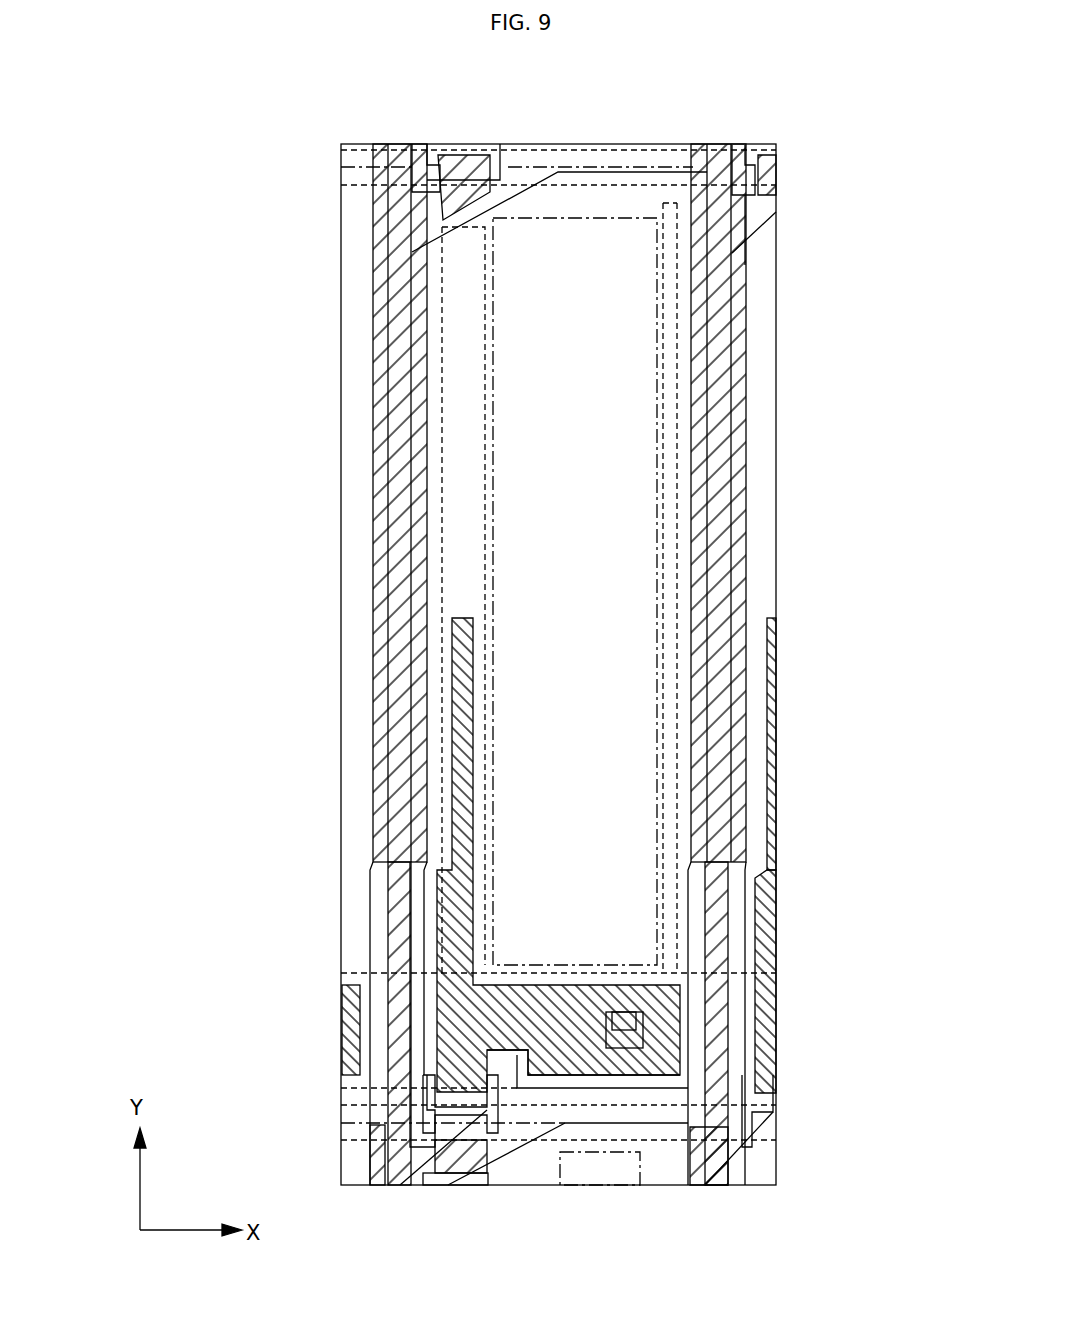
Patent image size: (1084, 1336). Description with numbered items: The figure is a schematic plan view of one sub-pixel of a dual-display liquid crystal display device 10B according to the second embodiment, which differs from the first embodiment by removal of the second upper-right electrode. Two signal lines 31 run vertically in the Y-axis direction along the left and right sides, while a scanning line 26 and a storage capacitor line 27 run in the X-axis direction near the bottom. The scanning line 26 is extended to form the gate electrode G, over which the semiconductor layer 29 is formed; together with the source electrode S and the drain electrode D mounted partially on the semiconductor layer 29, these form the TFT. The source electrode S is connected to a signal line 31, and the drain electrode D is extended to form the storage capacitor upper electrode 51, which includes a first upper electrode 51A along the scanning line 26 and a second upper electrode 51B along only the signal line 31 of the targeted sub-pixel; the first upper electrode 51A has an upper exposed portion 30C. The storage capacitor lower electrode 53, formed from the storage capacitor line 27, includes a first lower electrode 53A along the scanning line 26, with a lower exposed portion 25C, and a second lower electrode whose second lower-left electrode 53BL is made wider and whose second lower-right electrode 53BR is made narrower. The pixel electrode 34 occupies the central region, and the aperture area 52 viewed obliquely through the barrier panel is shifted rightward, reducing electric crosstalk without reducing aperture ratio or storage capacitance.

The dual-display liquid crystal display device 10B is at (448, 65).
The aperture area 52 is at (594, 196).
The pixel electrode 34 is at (605, 280).
The signal line 31 is at (386, 305).
The second lower-right electrode 53BR is at (677, 413).
The second lower-left electrode 53BL is at (455, 578).
The second upper electrode 51B is at (455, 690).
The lower exposed portion 25C is at (604, 978).
The upper exposed portion 30C is at (518, 972).
The storage capacitor line 27 is at (745, 946).
The storage capacitor lower electrode 53 is at (655, 1017).
The first lower electrode 53A is at (624, 1021).
The storage capacitor upper electrode 51 is at (583, 1065).
The first upper electrode 51A is at (600, 1168).
The scanning line 26 is at (660, 1110).
The semiconductor layer 29 is at (455, 1100).
The drain electrode D is at (440, 1062).
The gate electrode G is at (445, 1130).
The source electrode S is at (455, 1168).
The thin film transistor TFT is at (283, 1178).